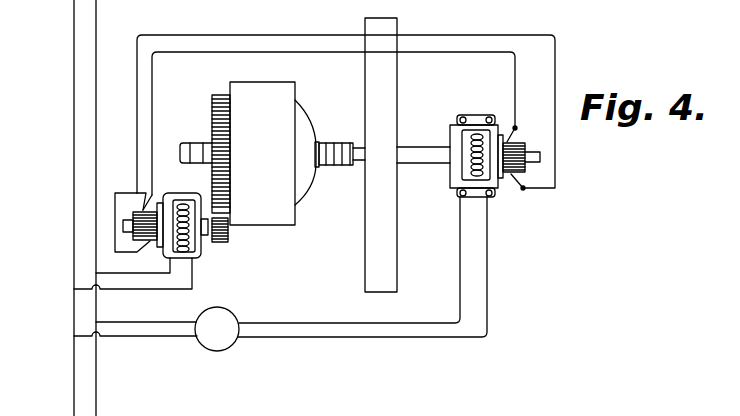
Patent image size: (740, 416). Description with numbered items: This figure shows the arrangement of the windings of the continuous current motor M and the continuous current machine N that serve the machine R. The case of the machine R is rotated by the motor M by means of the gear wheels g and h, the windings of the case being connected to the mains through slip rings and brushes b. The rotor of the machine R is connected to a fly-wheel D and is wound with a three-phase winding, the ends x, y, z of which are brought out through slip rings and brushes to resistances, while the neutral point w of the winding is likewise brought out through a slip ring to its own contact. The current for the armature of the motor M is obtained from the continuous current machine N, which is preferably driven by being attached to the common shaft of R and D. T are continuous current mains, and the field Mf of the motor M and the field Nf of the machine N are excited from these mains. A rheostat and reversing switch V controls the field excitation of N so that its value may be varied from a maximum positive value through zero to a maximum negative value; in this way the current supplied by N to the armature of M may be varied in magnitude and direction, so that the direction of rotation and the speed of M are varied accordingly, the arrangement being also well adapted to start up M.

The continuous current mains T is at (80, 386).
The continuous current motor M is at (170, 237).
The field of motor M Mf is at (193, 184).
The gear wheel g is at (228, 240).
The gear wheel h is at (211, 118).
The brushes b is at (193, 146).
The machine R is at (273, 153).
The end of three-phase winding z is at (326, 167).
The end of three-phase winding y is at (334, 167).
The end of three-phase winding x is at (343, 167).
The neutral point of the winding w is at (351, 167).
The fly-wheel D is at (391, 80).
The continuous current machine N is at (495, 167).
The field of machine N Nf is at (470, 147).
The rheostat and reversing switch V is at (217, 329).